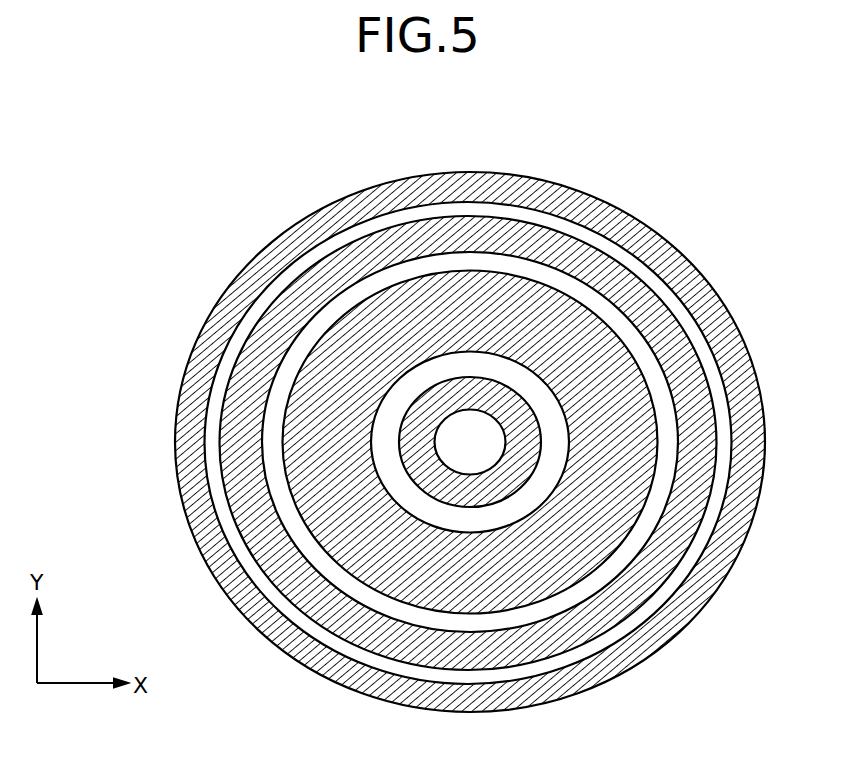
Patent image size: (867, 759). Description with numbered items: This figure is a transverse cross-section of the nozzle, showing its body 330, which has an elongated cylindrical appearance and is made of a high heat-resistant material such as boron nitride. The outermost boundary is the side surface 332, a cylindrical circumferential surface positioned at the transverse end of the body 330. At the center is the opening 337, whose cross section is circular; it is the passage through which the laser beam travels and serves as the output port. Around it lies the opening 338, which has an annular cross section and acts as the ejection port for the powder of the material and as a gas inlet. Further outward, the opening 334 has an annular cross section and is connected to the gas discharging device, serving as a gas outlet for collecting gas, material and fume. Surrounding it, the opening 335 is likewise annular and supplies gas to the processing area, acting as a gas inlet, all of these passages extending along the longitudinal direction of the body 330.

The body 330 is at (692, 256).
The side surface 332 is at (703, 612).
The opening 334 is at (477, 262).
The opening 335 is at (600, 237).
The opening 337 is at (470, 440).
The opening 338 is at (435, 377).